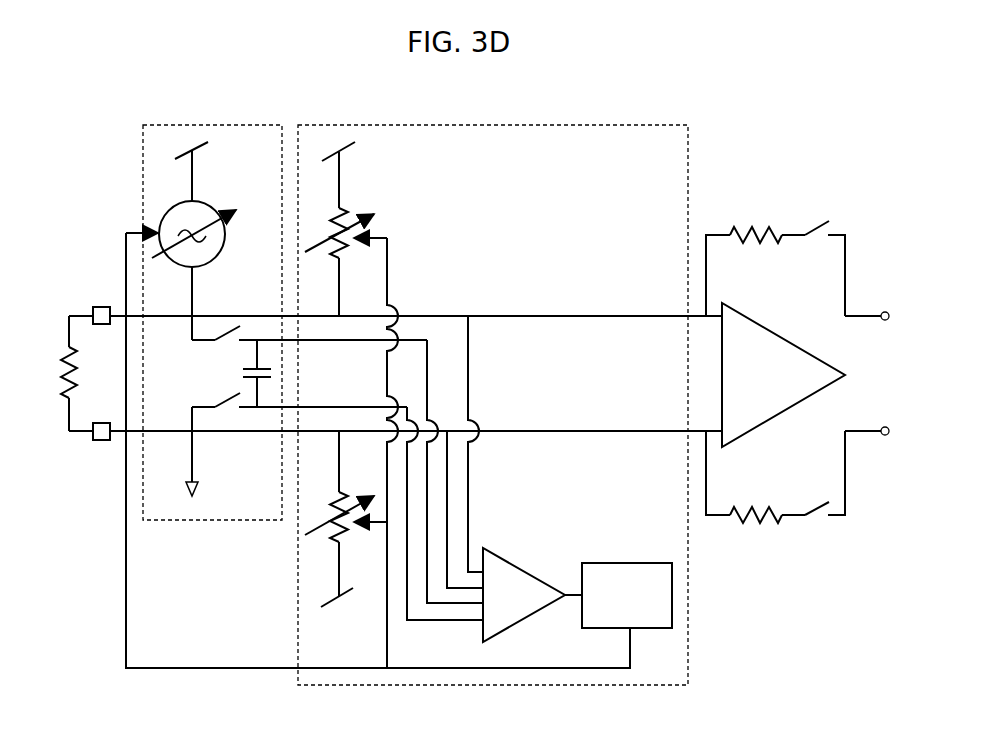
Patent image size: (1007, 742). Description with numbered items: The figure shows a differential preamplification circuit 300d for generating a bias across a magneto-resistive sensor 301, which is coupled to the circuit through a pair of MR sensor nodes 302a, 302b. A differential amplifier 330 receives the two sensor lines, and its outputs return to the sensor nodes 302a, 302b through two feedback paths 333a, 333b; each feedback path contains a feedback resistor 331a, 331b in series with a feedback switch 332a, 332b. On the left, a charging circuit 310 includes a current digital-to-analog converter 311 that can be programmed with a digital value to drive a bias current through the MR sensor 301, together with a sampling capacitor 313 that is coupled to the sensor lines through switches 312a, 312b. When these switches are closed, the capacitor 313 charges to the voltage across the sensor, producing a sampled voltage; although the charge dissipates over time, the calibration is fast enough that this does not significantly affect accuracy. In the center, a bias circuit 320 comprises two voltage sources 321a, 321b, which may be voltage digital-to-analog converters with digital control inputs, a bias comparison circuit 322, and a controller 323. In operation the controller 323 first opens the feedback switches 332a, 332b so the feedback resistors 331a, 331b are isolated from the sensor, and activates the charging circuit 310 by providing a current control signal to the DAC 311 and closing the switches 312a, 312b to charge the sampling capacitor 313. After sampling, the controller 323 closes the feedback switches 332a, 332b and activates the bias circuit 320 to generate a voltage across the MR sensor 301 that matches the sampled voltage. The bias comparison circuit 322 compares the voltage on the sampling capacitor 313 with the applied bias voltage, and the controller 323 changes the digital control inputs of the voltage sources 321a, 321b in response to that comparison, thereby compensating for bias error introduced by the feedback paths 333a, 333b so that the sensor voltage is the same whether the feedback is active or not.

The differential preamplification circuit 300d is at (660, 73).
The magneto-resistive sensor 301 is at (60, 362).
The MR sensor node 302a is at (100, 305).
The MR sensor node 302b is at (100, 441).
The charging circuit 310 is at (183, 125).
The current digital-to-analog converter 311 is at (204, 205).
The switch 312a is at (230, 335).
The switch 312b is at (226, 398).
The sampling capacitor 313 is at (272, 378).
The bias circuit 320 is at (492, 125).
The voltage source 321a is at (358, 202).
The voltage source 321b is at (325, 540).
The bias comparison circuit 322 is at (494, 479).
The controller 323 is at (627, 595).
The differential amplifier 330 is at (783, 375).
The feedback resistor 331a is at (775, 222).
The feedback resistor 331b is at (770, 528).
The feedback switch 332a is at (820, 232).
The feedback switch 332b is at (822, 505).
The feedback path 333a is at (847, 283).
The feedback path 333b is at (848, 455).